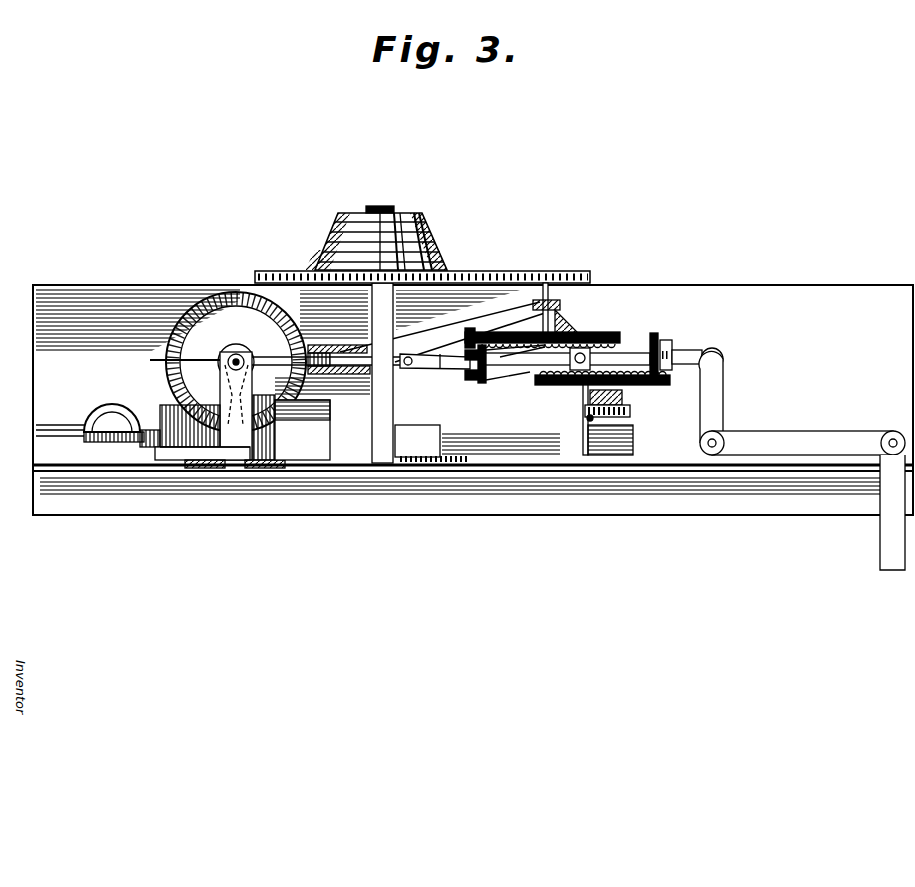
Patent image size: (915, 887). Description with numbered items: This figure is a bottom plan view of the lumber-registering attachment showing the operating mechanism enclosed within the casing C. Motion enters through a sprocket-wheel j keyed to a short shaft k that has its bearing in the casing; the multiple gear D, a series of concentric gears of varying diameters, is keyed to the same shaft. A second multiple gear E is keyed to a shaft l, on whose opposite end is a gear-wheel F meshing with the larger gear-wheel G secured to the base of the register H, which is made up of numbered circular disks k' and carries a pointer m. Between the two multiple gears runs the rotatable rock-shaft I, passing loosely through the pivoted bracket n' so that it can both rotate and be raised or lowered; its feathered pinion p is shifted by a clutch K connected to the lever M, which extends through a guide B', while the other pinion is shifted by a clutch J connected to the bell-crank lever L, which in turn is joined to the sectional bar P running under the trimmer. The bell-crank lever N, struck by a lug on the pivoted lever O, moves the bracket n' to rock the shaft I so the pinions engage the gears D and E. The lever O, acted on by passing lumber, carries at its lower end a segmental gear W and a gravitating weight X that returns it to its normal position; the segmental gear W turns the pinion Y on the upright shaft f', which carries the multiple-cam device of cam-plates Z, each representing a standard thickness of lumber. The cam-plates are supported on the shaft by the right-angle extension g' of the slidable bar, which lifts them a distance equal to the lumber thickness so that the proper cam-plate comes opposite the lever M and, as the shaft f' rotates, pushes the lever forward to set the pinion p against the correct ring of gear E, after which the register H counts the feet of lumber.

The casing C is at (728, 290).
The bell-crank lever N is at (492, 458).
The cam-plates Z is at (290, 340).
The right-angle extension g' is at (236, 406).
The upright shaft f' is at (175, 356).
The segmental gear W is at (160, 415).
The pinion Y is at (311, 417).
The gravitating weight X is at (90, 423).
The lever M is at (336, 346).
The guide B' is at (444, 332).
The gear-wheel F is at (547, 272).
The register H is at (432, 230).
The circular disks k' is at (384, 239).
The pointer m is at (372, 209).
The gear-wheel G is at (310, 275).
The shaft l is at (550, 305).
The multiple gear E is at (585, 334).
The clutch K is at (445, 357).
The pinion p is at (482, 384).
The rotatable shaft I is at (618, 353).
The pivoted bracket n' is at (591, 388).
The multiple gear D is at (640, 384).
The short shaft k is at (588, 403).
The sprocket-wheel j is at (588, 419).
The pivoted lever O is at (654, 333).
The clutch J is at (710, 349).
The bell-crank lever L is at (802, 403).
The bar sections P is at (884, 542).